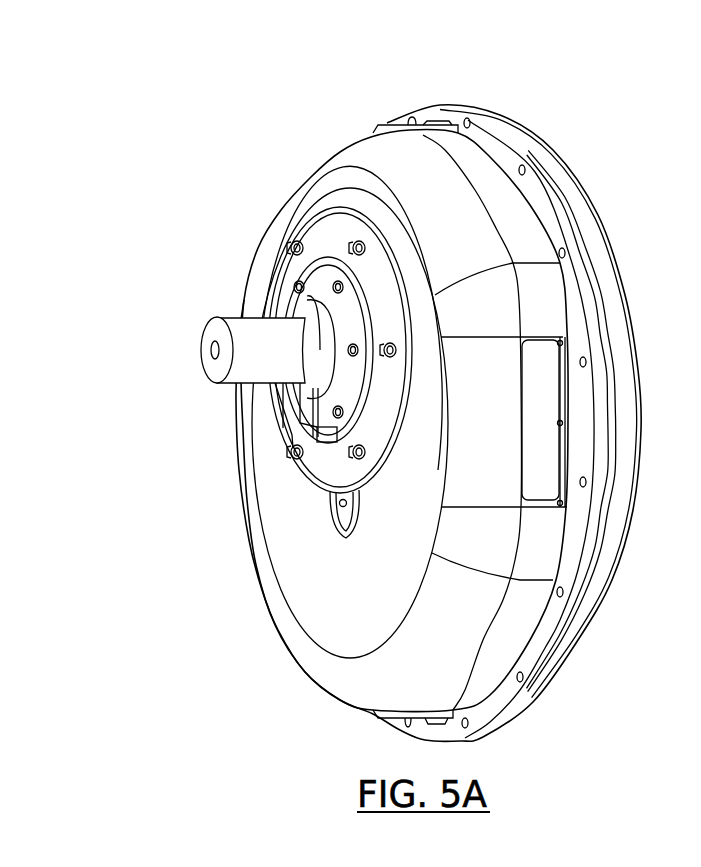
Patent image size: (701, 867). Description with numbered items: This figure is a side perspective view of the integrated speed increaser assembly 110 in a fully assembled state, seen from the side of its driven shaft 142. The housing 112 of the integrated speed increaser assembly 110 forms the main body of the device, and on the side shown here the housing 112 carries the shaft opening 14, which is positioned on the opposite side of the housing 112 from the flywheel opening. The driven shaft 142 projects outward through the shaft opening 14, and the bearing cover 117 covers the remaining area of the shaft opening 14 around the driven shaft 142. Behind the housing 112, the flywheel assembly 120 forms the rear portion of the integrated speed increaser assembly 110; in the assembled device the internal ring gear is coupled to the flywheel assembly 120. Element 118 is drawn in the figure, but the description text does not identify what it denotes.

The integrated speed increaser assembly 110 is at (280, 68).
The housing 112 is at (338, 163).
The hub mounting ring 118 is at (322, 232).
The flywheel assembly 120 is at (590, 240).
The driven shaft 142 is at (252, 334).
The shaft opening 14 is at (220, 351).
The bearing cover 117 is at (290, 403).